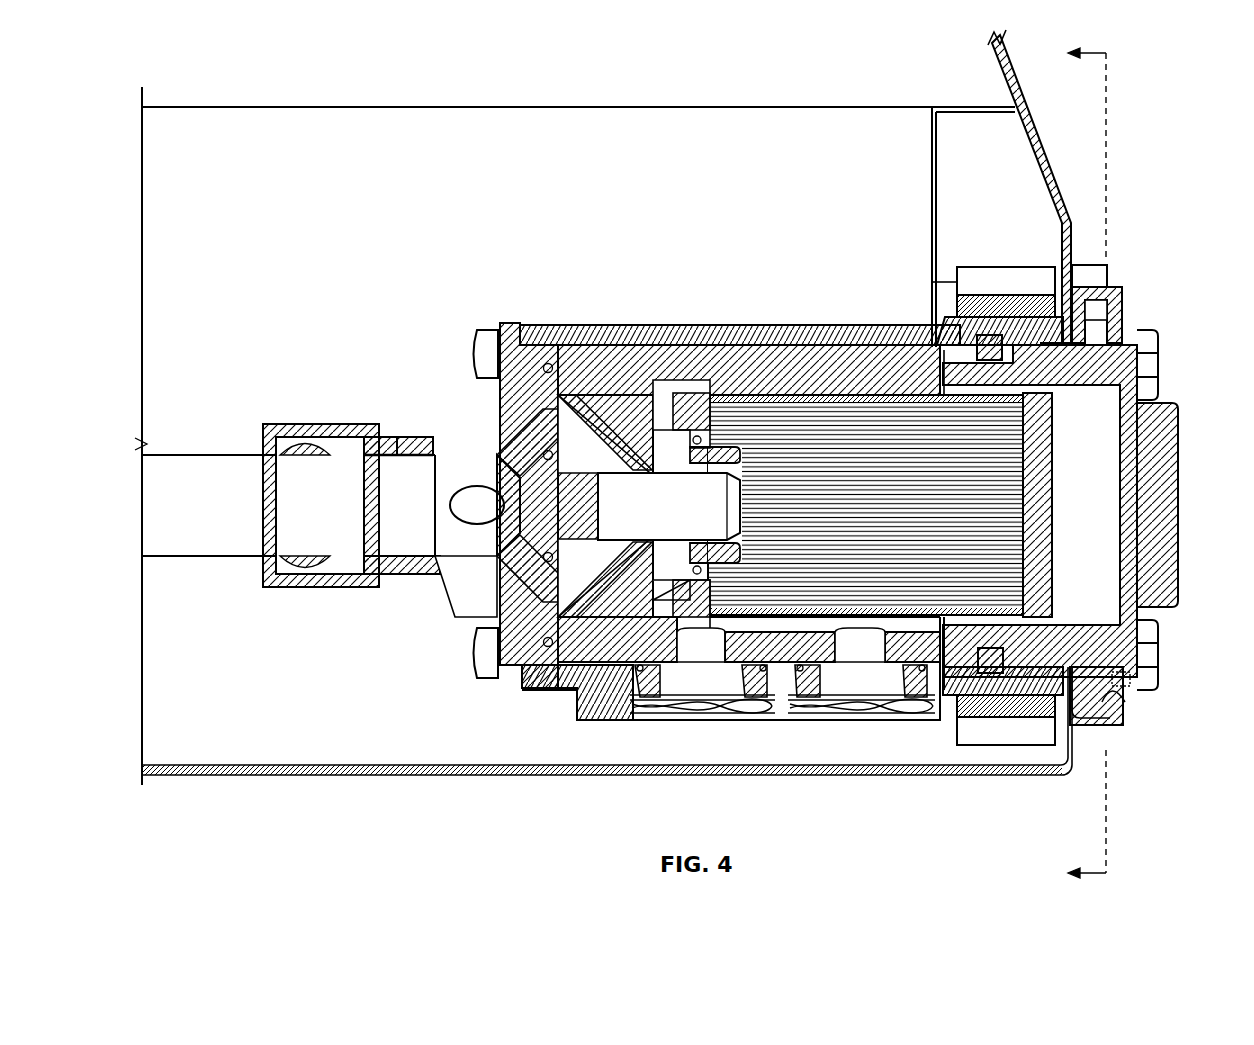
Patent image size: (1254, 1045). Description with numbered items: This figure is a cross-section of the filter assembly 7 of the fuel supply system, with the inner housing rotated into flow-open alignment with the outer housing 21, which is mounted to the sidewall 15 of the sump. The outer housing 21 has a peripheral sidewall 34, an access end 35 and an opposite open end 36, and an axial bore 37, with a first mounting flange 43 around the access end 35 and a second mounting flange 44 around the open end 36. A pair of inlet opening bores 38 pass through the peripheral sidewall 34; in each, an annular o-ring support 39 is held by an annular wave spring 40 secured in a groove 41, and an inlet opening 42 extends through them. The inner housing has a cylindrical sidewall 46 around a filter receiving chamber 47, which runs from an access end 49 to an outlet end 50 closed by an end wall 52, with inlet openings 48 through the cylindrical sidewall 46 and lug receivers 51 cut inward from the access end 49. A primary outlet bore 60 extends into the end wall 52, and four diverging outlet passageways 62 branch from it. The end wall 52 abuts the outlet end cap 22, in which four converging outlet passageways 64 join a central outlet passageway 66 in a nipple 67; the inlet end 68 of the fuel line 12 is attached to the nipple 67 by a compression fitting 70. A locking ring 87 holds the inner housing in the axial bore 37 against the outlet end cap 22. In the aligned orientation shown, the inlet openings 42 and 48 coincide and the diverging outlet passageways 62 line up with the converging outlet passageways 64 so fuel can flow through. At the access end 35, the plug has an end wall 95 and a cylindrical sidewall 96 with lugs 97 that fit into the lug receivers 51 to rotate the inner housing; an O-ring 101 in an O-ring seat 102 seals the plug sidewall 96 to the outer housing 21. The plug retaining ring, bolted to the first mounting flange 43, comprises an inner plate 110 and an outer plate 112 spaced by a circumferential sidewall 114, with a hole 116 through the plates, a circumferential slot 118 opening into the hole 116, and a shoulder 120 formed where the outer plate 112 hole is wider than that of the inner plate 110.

The fuel line 12 is at (198, 455).
The inlet end of the fuel line 68 is at (402, 460).
The converging outlet passageways 64 is at (467, 500).
The central outlet passageway 66 is at (397, 467).
The compression fitting 70 is at (312, 587).
The nipple 67 is at (393, 577).
The outlet end cap 22 is at (488, 615).
The open end 36 is at (510, 340).
The second mounting flange 44 is at (550, 320).
The outlet end 50 is at (580, 350).
The diverging outlet passageways 62 is at (600, 350).
The outer housing 21 is at (636, 318).
The primary outlet bore 60 is at (678, 358).
The cylindrical sidewall 46 is at (738, 357).
The peripheral sidewall 34 is at (758, 325).
The filter receiving chamber 47 is at (805, 358).
The axial bore 37 is at (845, 353).
The lug receivers 51 is at (972, 345).
The access end 49 is at (932, 327).
The locking ring 87 is at (990, 340).
The first mounting flange 43 is at (1000, 266).
The access end 35 is at (1043, 347).
The sidewall 15 is at (1038, 137).
The inner plate 110 is at (1080, 297).
The circumferential sidewall 114 is at (1108, 287).
The outer plate 112 is at (1118, 297).
The shoulder 120 is at (1087, 323).
The cylindrical sidewall 96 is at (1083, 370).
The end wall 95 is at (1168, 565).
The end wall 52 is at (578, 665).
The inlet opening bores 38 is at (652, 718).
The groove 41 is at (660, 713).
The inlet openings 48 is at (742, 660).
The inlet opening 42 is at (718, 650).
The annular wave spring 40 is at (760, 670).
The annular o-ring support 39 is at (818, 682).
The lugs 97 is at (960, 650).
The O-ring 101 is at (1027, 697).
The O-ring seat 102 is at (1032, 663).
The hole 116 is at (1122, 682).
The circumferential slot 118 is at (1117, 707).
The filter assembly 7 is at (1079, 466).